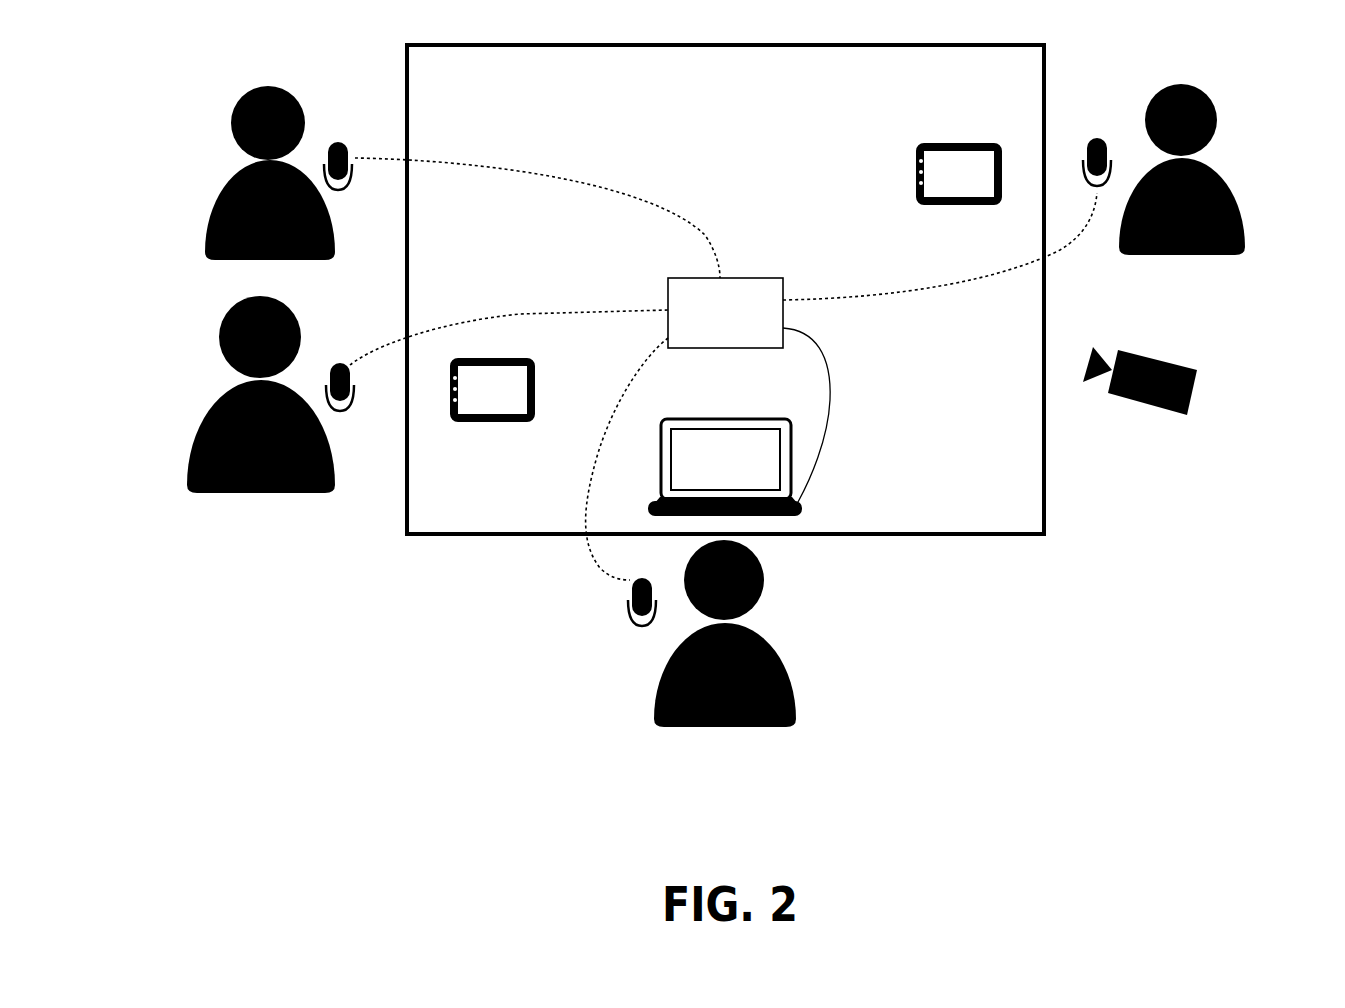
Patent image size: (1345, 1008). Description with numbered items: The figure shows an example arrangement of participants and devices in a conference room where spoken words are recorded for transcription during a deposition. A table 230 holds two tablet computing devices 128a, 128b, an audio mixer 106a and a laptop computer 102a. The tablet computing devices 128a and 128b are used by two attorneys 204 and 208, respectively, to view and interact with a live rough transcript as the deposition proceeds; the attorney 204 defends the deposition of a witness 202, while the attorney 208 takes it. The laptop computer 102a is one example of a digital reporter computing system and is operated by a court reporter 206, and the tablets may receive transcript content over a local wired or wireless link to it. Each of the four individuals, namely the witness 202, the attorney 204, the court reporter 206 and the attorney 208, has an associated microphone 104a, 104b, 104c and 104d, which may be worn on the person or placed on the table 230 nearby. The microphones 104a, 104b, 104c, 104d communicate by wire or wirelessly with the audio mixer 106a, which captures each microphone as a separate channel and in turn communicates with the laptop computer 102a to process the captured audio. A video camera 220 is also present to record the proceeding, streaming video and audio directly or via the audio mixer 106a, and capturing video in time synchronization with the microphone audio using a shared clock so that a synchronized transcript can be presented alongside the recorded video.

The table 230 is at (820, 38).
The audio mixer 106a is at (668, 278).
The laptop computer 102a is at (683, 414).
The tablet computing device 128a is at (525, 432).
The tablet computing device 128b is at (937, 209).
The video camera 220 is at (1197, 362).
The witness 202 is at (215, 262).
The attorney 204 is at (232, 498).
The court reporter 206 is at (801, 683).
The attorney 208 is at (1228, 170).
The microphone 104a is at (360, 197).
The microphone 104b is at (360, 413).
The microphone 104c is at (627, 635).
The microphone 104d is at (1095, 122).